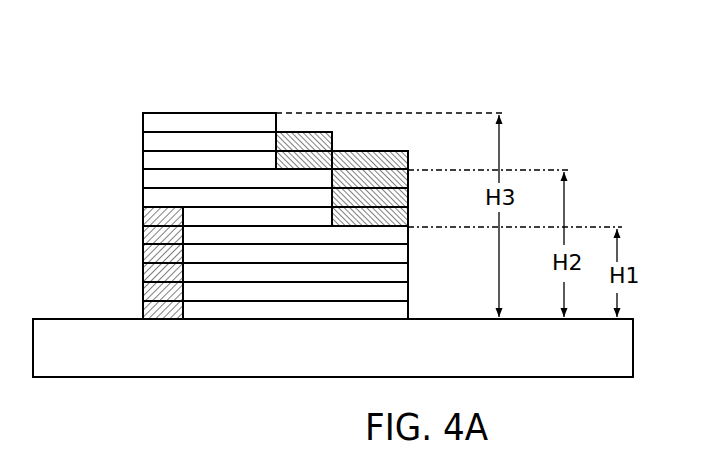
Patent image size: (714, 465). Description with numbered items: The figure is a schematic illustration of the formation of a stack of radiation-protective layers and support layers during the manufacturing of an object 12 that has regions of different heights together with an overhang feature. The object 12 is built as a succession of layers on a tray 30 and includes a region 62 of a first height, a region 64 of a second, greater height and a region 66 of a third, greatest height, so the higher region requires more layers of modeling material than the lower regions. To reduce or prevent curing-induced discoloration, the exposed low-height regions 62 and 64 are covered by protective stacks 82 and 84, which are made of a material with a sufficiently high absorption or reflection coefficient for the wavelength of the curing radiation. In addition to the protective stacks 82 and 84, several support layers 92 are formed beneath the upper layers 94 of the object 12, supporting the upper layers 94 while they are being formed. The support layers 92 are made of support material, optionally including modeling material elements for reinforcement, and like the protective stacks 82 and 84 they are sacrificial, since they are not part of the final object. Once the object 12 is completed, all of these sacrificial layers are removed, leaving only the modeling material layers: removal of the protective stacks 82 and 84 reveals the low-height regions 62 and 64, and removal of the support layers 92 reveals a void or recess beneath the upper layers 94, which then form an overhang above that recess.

The object 12 is at (110, 74).
The tray 30 is at (333, 348).
The region 62 is at (384, 224).
The region 64 is at (322, 148).
The region 66 is at (216, 113).
The protective stack 82 is at (418, 187).
The protective stack 84 is at (312, 111).
The support layers 92 is at (138, 207).
The upper layers 94 is at (138, 113).